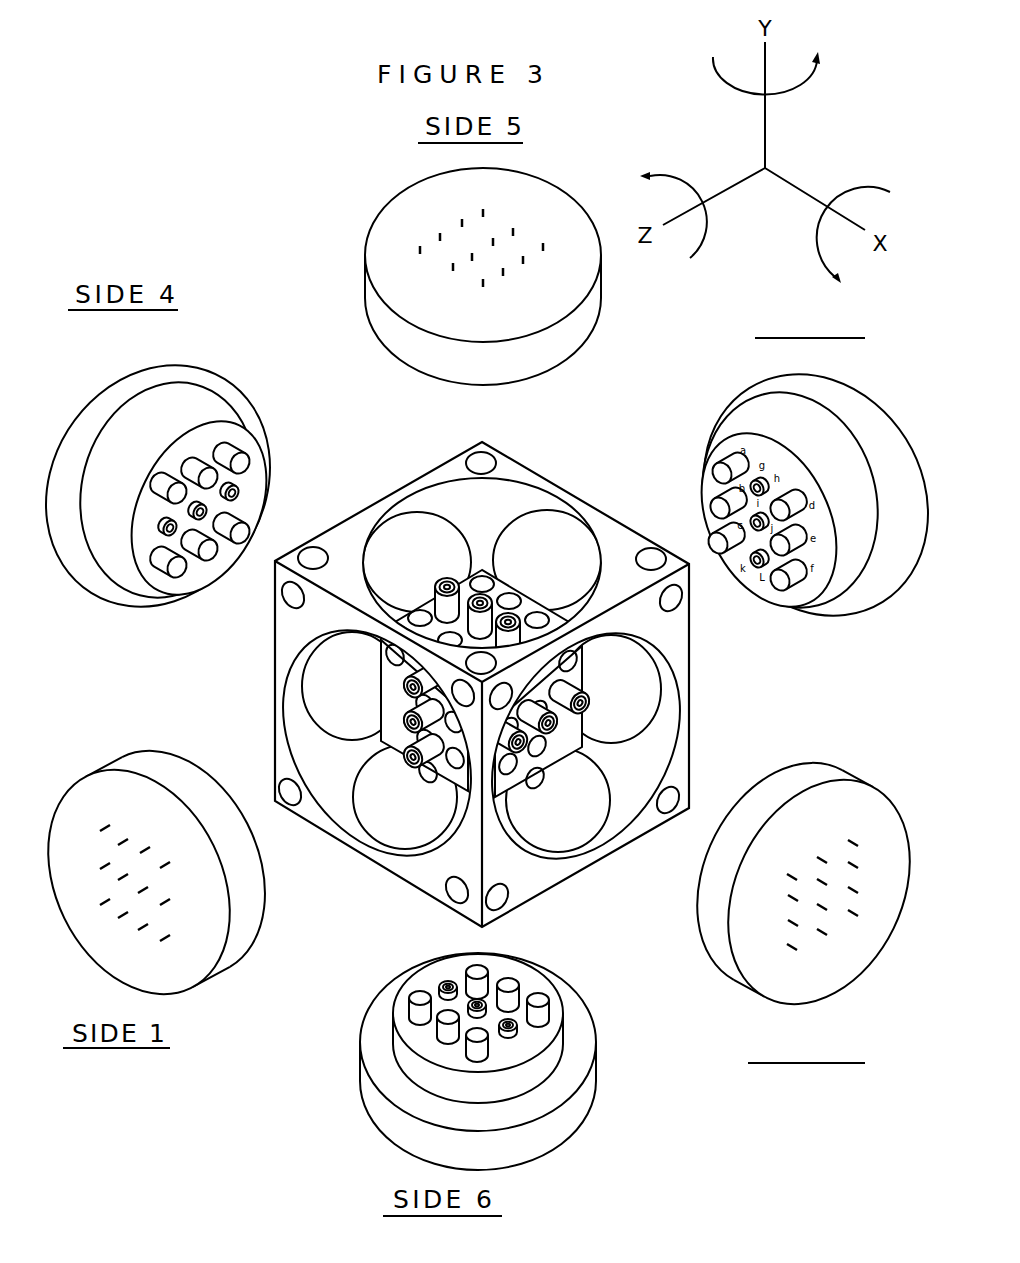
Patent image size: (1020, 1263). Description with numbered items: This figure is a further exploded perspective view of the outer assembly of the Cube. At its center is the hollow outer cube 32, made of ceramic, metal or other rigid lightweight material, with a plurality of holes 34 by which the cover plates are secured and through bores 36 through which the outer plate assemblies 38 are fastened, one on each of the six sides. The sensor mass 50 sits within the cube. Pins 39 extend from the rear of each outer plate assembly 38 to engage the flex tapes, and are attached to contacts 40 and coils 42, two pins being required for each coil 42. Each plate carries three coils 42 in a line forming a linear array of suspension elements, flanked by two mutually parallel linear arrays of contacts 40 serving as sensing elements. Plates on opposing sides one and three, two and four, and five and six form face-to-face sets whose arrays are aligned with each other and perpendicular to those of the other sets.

The outer cube 32 is at (510, 470).
The holes 34 is at (478, 463).
The bores 36 is at (495, 507).
The outer plate assembly 38 is at (853, 588).
The pins 39 is at (104, 823).
The contacts 40 is at (720, 473).
The coils 42 is at (757, 570).
The sensor mass 50 is at (535, 585).